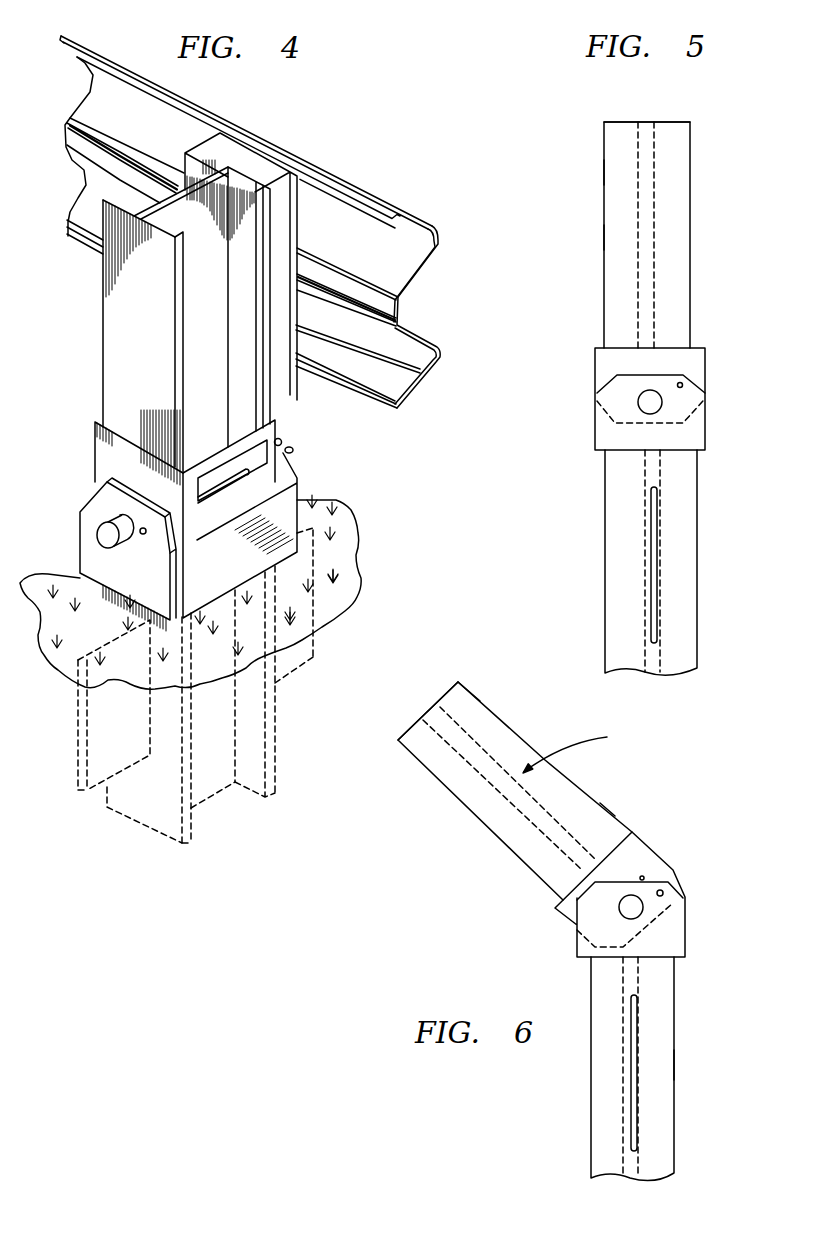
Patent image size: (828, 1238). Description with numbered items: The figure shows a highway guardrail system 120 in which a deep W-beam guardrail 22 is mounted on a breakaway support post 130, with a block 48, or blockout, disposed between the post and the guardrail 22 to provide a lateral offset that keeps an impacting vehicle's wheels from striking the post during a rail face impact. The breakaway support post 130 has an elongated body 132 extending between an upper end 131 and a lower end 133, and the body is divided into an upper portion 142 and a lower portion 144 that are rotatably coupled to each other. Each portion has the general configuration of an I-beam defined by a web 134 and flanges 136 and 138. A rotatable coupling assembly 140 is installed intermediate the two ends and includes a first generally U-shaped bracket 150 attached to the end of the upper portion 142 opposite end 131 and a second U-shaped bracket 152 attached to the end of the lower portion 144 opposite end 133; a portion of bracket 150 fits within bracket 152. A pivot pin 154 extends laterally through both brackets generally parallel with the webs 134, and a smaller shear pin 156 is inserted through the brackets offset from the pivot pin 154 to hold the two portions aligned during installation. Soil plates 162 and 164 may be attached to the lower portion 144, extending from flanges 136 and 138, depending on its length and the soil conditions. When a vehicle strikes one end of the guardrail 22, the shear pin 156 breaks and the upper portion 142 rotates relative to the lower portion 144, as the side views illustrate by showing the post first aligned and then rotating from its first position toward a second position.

In FIG. 4, the guardrail 22 is at (396, 197).
In FIG. 4, the block 48 is at (235, 143).
In FIG. 4, the highway guardrail system 120 is at (345, 132).
In FIG. 4, the breakaway support post 130 is at (88, 356).
In FIG. 5, the breakaway support post 130 is at (720, 189).
In FIG. 6, the breakaway support post 130 is at (479, 847).
In FIG. 4, the end 131 is at (90, 196).
In FIG. 5, the end 131 is at (617, 121).
In FIG. 6, the end 131 is at (447, 690).
In FIG. 4, the elongated body 132 is at (282, 390).
In FIG. 5, the elongated body 132 is at (706, 266).
In FIG. 6, the elongated body 132 is at (570, 989).
In FIG. 4, the end 133 is at (170, 846).
In FIG. 4, the web 134 is at (160, 200).
In FIG. 5, the web 134 is at (655, 150).
In FIG. 6, the web 134 is at (478, 742).
In FIG. 4, the flange 136 is at (177, 345).
In FIG. 5, the flange 136 is at (605, 173).
In FIG. 6, the flange 136 is at (590, 812).
In FIG. 4, the flange 138 is at (264, 217).
In FIG. 4, the rotatable coupling assembly 140 is at (81, 470).
In FIG. 5, the rotatable coupling assembly 140 is at (720, 371).
In FIG. 6, the rotatable coupling assembly 140 is at (701, 882).
In FIG. 4, the upper portion 142 is at (104, 306).
In FIG. 5, the upper portion 142 is at (605, 237).
In FIG. 6, the upper portion 142 is at (478, 696).
In FIG. 4, the lower portion 144 is at (134, 813).
In FIG. 5, the lower portion 144 is at (606, 510).
In FIG. 6, the lower portion 144 is at (676, 993).
In FIG. 4, the first U-shaped bracket 150 is at (97, 428).
In FIG. 4, the second U-shaped bracket 152 is at (80, 512).
In FIG. 4, the pivot pin 154 is at (100, 542).
In FIG. 5, the pivot pin 154 is at (640, 402).
In FIG. 6, the pivot pin 154 is at (643, 911).
In FIG. 4, the shear pin 156 is at (284, 446).
In FIG. 5, the shear pin 156 is at (683, 386).
In FIG. 6, the shear pin 156 is at (663, 891).
In FIG. 4, the soil plate 162 is at (78, 795).
In FIG. 5, the soil plate 162 is at (657, 600).
In FIG. 6, the soil plate 162 is at (632, 1118).
In FIG. 4, the soil plate 164 is at (296, 666).